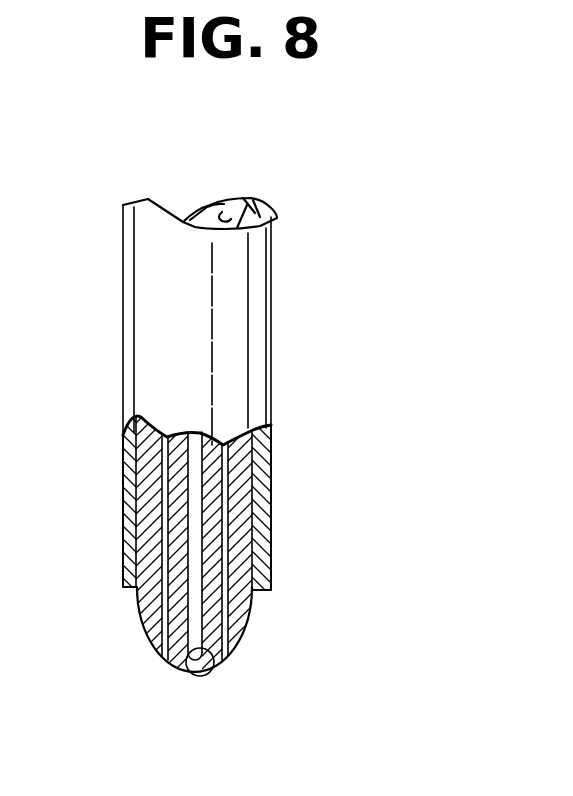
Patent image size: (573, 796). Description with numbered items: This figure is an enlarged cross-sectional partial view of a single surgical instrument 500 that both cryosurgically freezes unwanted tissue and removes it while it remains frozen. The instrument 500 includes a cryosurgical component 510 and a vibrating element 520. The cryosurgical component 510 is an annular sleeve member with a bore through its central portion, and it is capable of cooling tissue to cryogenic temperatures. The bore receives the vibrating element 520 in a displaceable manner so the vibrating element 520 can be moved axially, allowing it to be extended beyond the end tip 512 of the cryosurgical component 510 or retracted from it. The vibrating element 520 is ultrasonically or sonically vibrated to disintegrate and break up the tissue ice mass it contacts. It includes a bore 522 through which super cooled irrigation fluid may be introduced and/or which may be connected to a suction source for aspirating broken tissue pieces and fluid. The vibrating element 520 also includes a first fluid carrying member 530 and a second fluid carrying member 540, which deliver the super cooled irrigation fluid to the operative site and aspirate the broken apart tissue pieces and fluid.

The single instrument 500 is at (298, 224).
The cryosurgical component 510 is at (258, 466).
The end tip 512 is at (258, 594).
The vibrating element 520 is at (150, 603).
The bore 522 is at (207, 668).
The first fluid carrying member 530 is at (167, 495).
The second fluid carrying member 540 is at (220, 516).